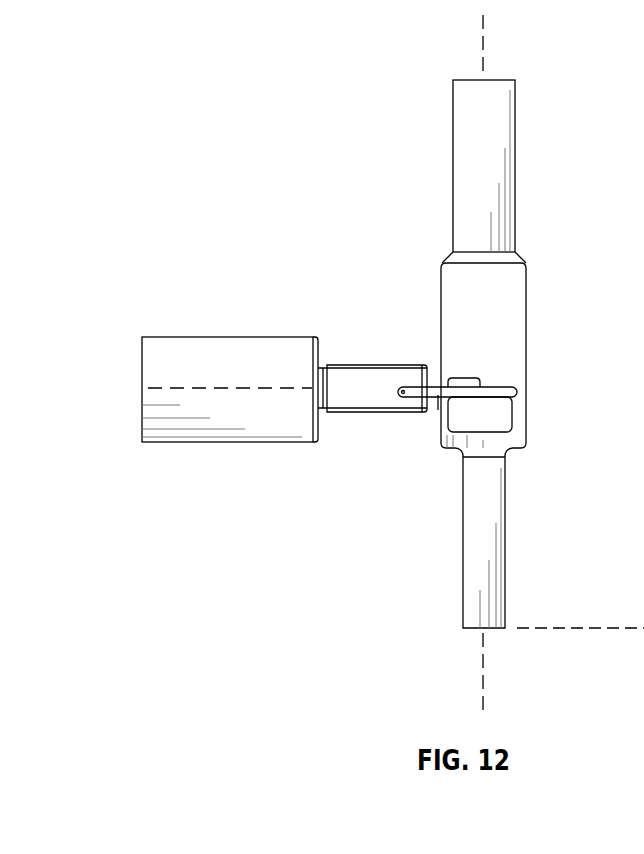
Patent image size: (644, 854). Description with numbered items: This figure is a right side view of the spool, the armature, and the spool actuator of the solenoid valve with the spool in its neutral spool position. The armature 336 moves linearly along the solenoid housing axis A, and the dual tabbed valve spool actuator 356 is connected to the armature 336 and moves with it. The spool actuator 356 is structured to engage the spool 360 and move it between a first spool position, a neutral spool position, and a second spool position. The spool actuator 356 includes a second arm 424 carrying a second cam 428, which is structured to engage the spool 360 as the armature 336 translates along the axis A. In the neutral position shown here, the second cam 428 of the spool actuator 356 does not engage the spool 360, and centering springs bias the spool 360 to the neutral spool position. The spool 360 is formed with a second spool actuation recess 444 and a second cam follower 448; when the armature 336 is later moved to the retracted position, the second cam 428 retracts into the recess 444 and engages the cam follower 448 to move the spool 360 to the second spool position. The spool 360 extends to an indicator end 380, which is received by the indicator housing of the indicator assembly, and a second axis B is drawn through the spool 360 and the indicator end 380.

The armature 336 is at (197, 353).
The dual tabbed valve spool actuator 356 is at (383, 380).
The spool 360 is at (477, 567).
The indicator end 380 is at (467, 130).
The second arm 424 is at (437, 393).
The second cam 428 is at (518, 392).
The second spool actuation recess 444 is at (493, 417).
The second cam follower 448 is at (490, 383).
The solenoid housing axis A is at (210, 390).
The axis B is at (482, 58).